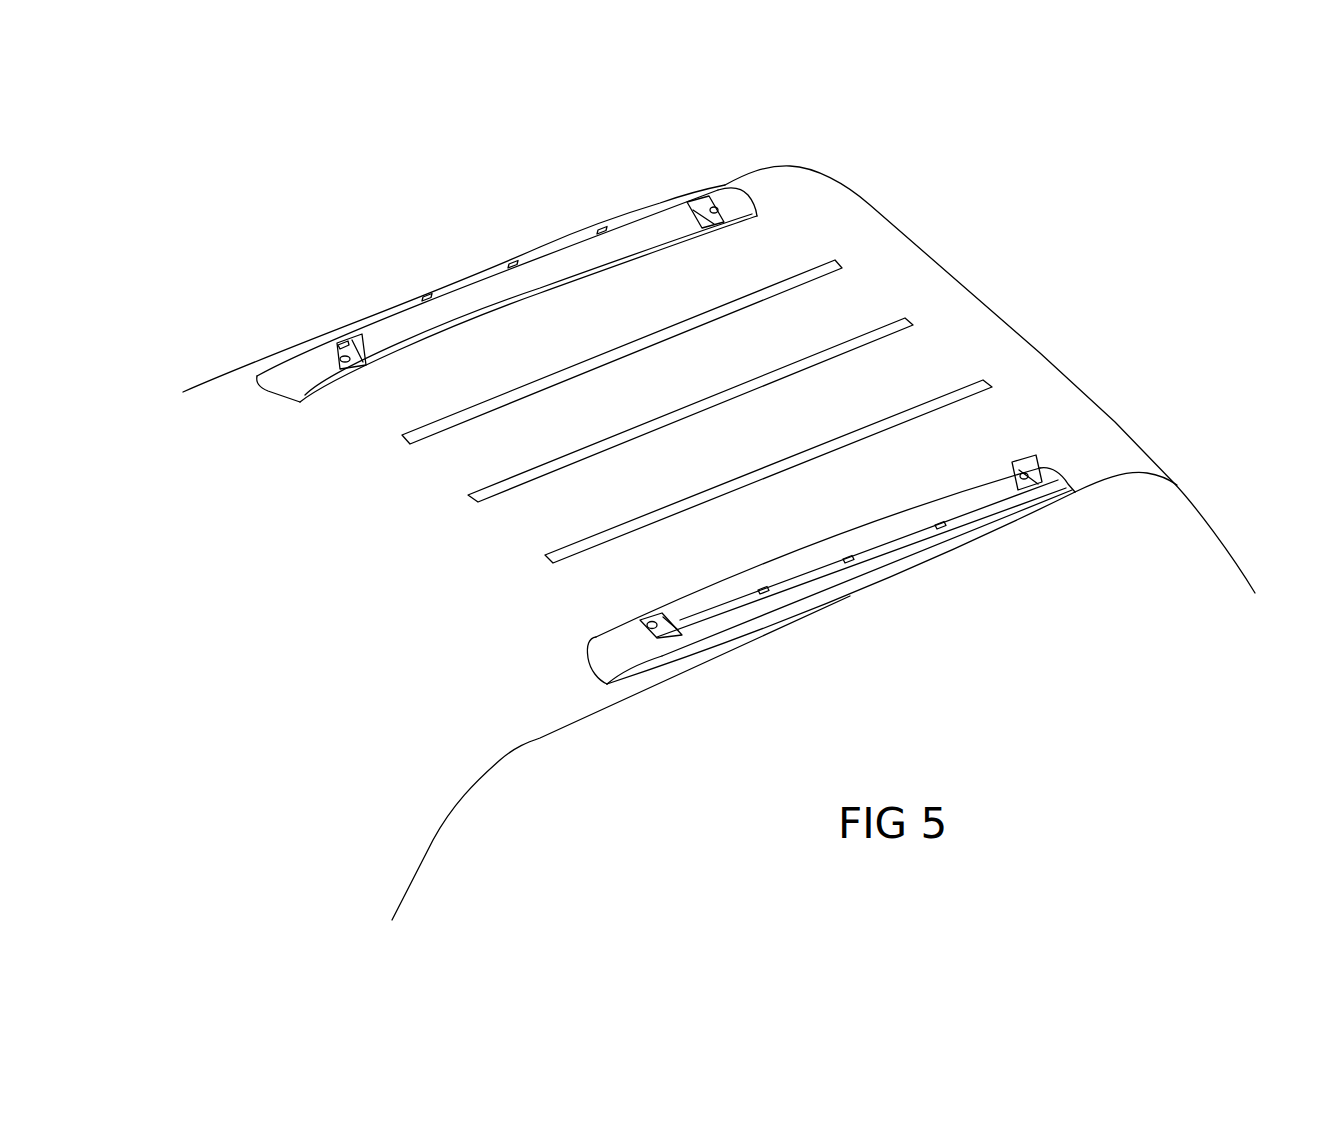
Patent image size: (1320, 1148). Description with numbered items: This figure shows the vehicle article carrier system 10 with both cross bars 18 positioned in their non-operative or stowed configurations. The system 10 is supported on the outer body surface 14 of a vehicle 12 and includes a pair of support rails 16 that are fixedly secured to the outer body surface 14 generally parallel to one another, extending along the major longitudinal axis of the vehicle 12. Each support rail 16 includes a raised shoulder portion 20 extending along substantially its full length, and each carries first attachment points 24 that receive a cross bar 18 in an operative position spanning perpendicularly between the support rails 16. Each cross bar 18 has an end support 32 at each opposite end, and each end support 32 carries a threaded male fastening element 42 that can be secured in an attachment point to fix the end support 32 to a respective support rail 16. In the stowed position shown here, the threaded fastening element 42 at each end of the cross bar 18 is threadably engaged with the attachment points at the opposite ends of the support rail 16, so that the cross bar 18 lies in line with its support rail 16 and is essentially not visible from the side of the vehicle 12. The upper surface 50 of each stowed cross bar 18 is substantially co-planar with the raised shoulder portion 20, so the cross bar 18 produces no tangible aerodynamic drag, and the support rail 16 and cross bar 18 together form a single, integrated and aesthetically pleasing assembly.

The vehicle article carrier system 10 is at (667, 397).
The vehicle 12 is at (204, 371).
The outer body surface 14 is at (1010, 353).
The support rail 16 is at (667, 397).
The cross bar 18 is at (565, 296).
The raised shoulder portion 20 is at (700, 630).
The first attachment point 24 is at (425, 298).
The end support 32 is at (706, 401).
The threaded male fastening element 42 is at (712, 208).
The upper surface 50 is at (728, 583).